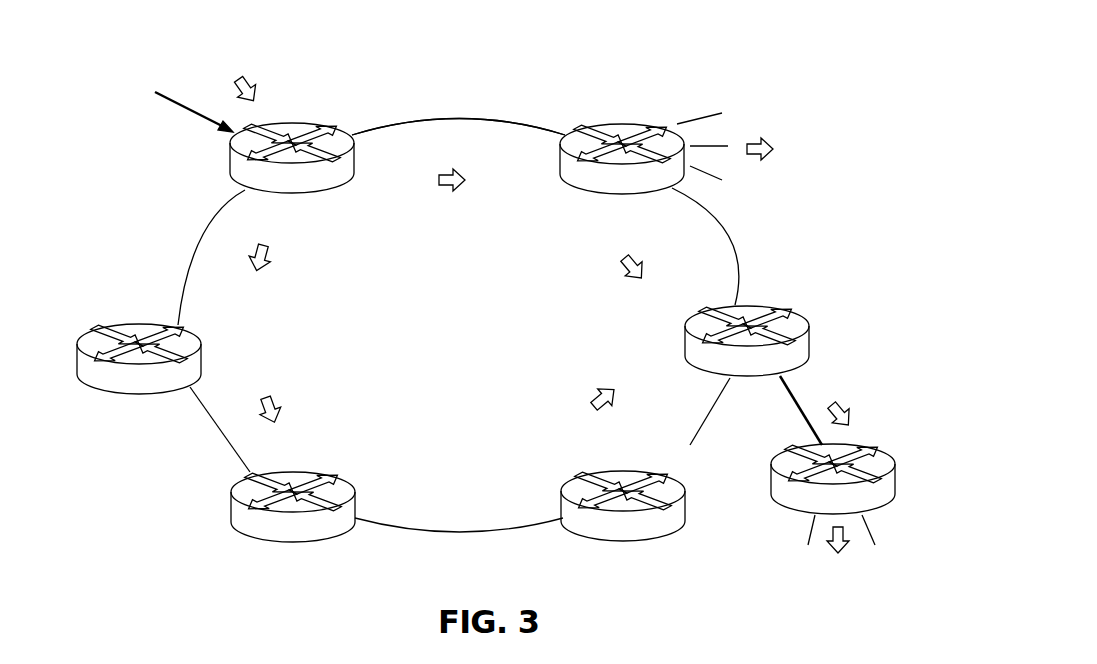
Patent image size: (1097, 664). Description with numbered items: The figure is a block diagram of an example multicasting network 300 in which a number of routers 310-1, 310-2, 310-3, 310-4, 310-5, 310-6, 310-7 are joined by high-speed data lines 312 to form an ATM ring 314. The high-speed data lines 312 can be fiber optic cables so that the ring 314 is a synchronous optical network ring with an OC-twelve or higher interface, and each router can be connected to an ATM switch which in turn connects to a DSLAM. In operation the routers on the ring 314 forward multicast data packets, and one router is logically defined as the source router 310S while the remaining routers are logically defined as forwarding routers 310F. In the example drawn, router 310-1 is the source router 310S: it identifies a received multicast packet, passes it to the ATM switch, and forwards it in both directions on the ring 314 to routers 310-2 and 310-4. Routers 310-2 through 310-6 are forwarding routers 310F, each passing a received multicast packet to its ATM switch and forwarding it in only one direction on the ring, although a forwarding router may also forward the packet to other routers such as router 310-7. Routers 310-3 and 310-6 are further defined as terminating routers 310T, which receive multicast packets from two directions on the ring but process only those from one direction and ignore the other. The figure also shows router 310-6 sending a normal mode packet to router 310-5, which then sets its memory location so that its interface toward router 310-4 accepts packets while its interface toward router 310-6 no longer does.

The multicasting network 300 is at (156, 32).
The router 310-1 is at (322, 193).
The router 310-2 is at (192, 340).
The router 310-3 is at (312, 473).
The router 310-4 is at (592, 195).
The router 310-5 is at (686, 338).
The router 310-6 is at (565, 505).
The router 310-7 is at (885, 450).
The source router 310S is at (321, 183).
The forwarding router 310F is at (443, 332).
The terminating router 310T is at (442, 507).
The high-speed data line 312 is at (465, 117).
The ATM ring 314 is at (495, 118).